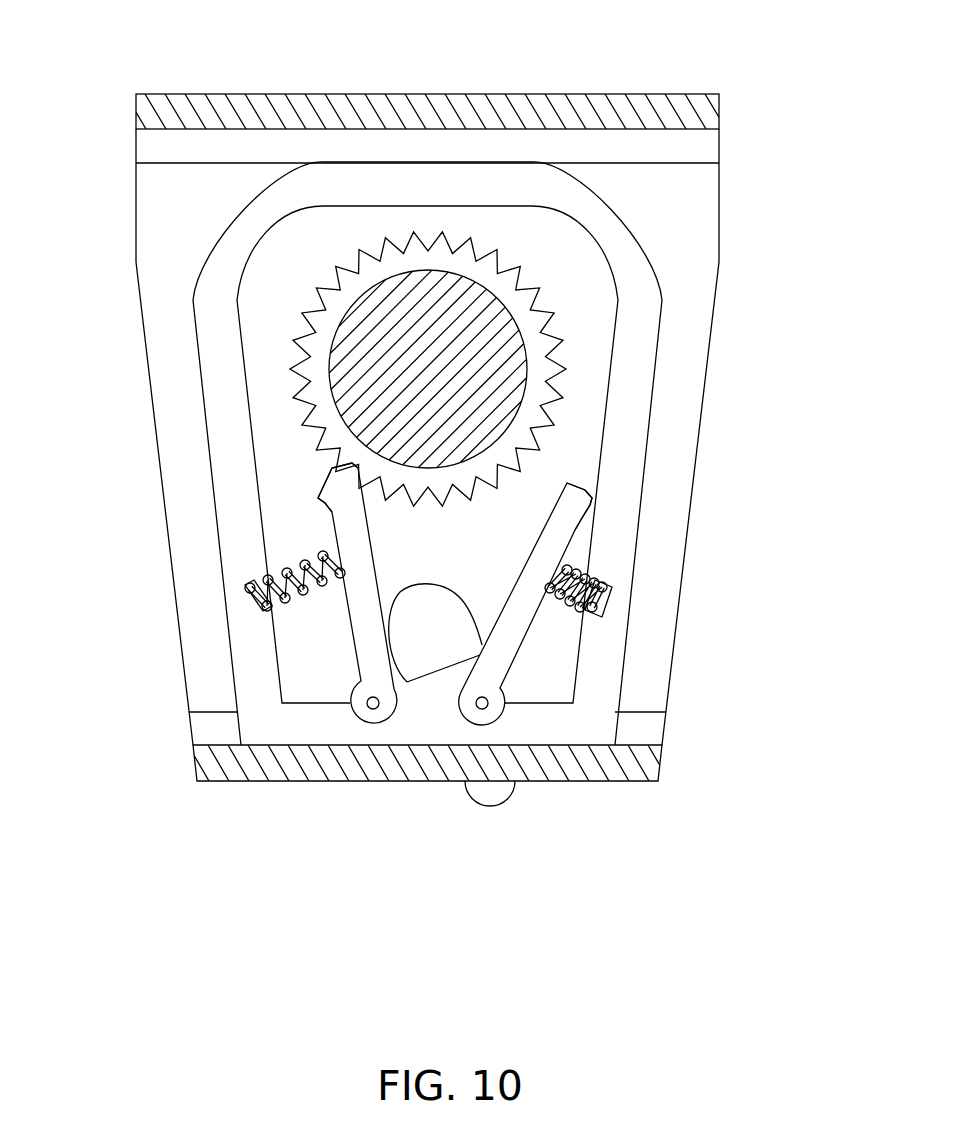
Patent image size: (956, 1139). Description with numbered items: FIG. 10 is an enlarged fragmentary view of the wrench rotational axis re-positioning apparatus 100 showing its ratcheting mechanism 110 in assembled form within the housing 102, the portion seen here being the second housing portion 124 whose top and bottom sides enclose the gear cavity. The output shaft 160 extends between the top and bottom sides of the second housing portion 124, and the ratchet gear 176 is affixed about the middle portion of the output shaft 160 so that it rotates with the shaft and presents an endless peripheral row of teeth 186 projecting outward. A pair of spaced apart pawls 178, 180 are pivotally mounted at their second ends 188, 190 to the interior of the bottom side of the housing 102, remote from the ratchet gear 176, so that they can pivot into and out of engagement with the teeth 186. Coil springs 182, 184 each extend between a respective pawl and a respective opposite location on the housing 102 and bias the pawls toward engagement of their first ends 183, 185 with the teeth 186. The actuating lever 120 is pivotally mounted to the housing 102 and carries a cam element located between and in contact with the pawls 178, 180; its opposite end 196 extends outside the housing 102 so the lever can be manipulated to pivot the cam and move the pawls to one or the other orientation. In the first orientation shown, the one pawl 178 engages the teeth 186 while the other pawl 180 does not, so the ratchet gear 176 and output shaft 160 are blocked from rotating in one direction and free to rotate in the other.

The wrench rotational axis re-positioning apparatus 100 is at (593, 59).
The housing 102 is at (297, 96).
The ratcheting mechanism 110 is at (552, 342).
The actuating lever 120 is at (476, 797).
The second housing portion 124 is at (702, 408).
The output shaft 160 is at (342, 375).
The ratchet gear 176 is at (555, 320).
The pawl 178 is at (349, 614).
The pawl 180 is at (537, 621).
The coil spring 182 is at (245, 605).
The first end of pawl 183 is at (328, 500).
The coil spring 184 is at (613, 598).
The first end of pawl 185 is at (597, 506).
The endless peripheral row of teeth 186 is at (585, 390).
The second end of pawl 188 is at (356, 708).
The second end of pawl 190 is at (497, 708).
The opposite end of actuating lever 196 is at (505, 790).